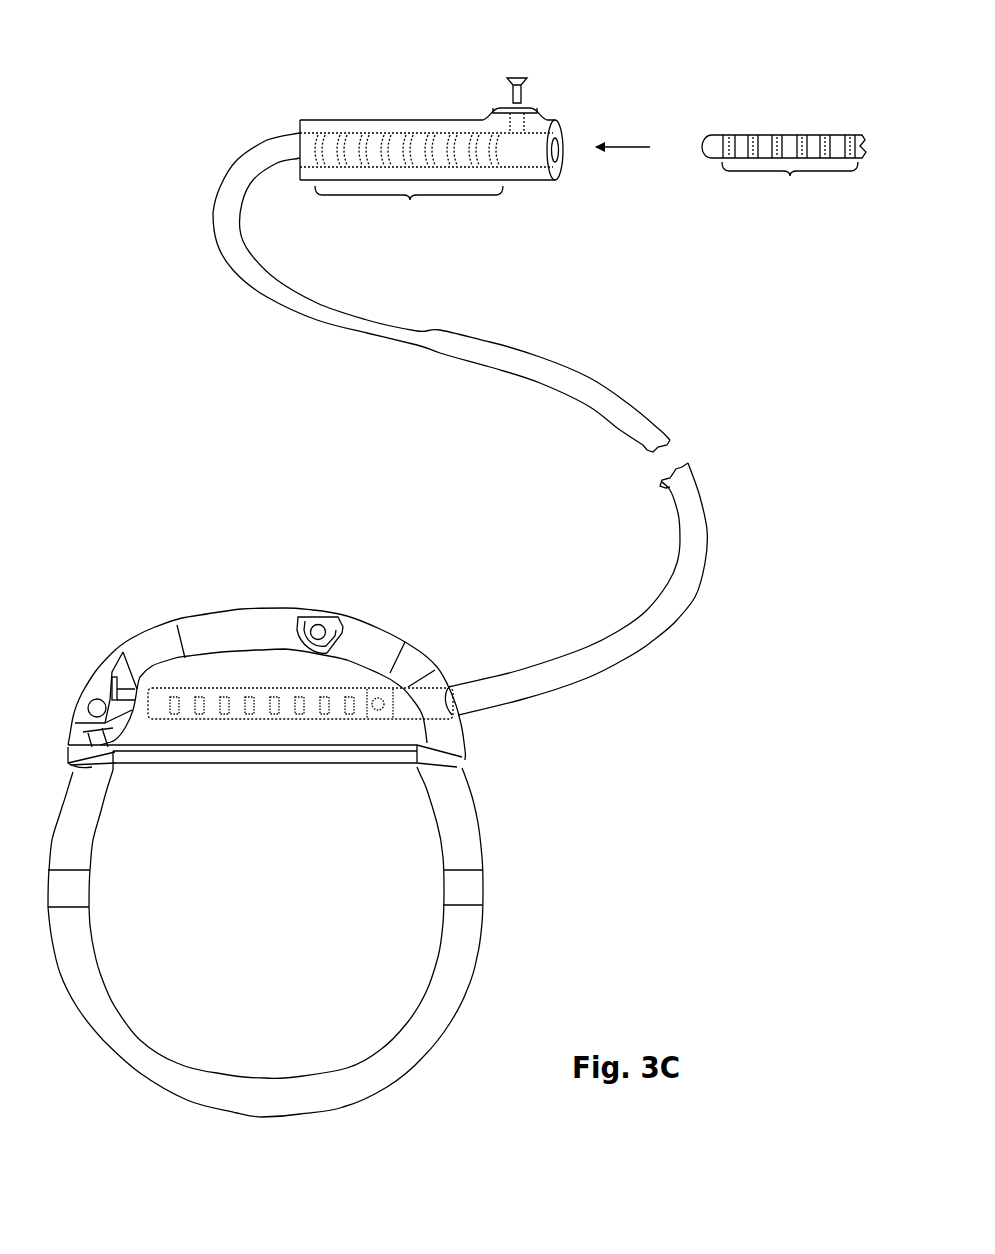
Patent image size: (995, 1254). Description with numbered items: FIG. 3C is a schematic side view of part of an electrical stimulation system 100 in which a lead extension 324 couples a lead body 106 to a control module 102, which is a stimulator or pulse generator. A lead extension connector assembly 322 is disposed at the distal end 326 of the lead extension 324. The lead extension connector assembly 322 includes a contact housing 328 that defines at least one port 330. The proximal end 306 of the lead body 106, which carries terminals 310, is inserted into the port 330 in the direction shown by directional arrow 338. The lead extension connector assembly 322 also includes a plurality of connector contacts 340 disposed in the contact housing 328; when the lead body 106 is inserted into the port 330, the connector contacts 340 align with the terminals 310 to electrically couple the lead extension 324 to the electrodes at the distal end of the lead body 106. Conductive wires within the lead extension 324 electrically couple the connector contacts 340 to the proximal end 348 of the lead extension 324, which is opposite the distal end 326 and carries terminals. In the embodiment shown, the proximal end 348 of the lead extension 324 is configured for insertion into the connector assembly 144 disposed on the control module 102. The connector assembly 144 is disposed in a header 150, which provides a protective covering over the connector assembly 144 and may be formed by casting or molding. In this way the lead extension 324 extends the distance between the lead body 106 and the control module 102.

The electrical stimulation system 100 is at (652, 282).
The control module 102 is at (532, 891).
The lead body 106 is at (786, 133).
The connector assembly 144 is at (219, 688).
The header 150 is at (359, 638).
The proximal end of the lead body 306 is at (752, 108).
The terminals 310 is at (790, 182).
The lead extension connector assembly 322 is at (391, 118).
The lead extension 324 is at (545, 358).
The distal end of the lead extension 326 is at (296, 116).
The contact housing 328 is at (346, 127).
The port 330 is at (576, 169).
The directional arrow 338 is at (627, 146).
The connector contacts 340 is at (409, 210).
The proximal end of the lead extension 348 is at (470, 662).